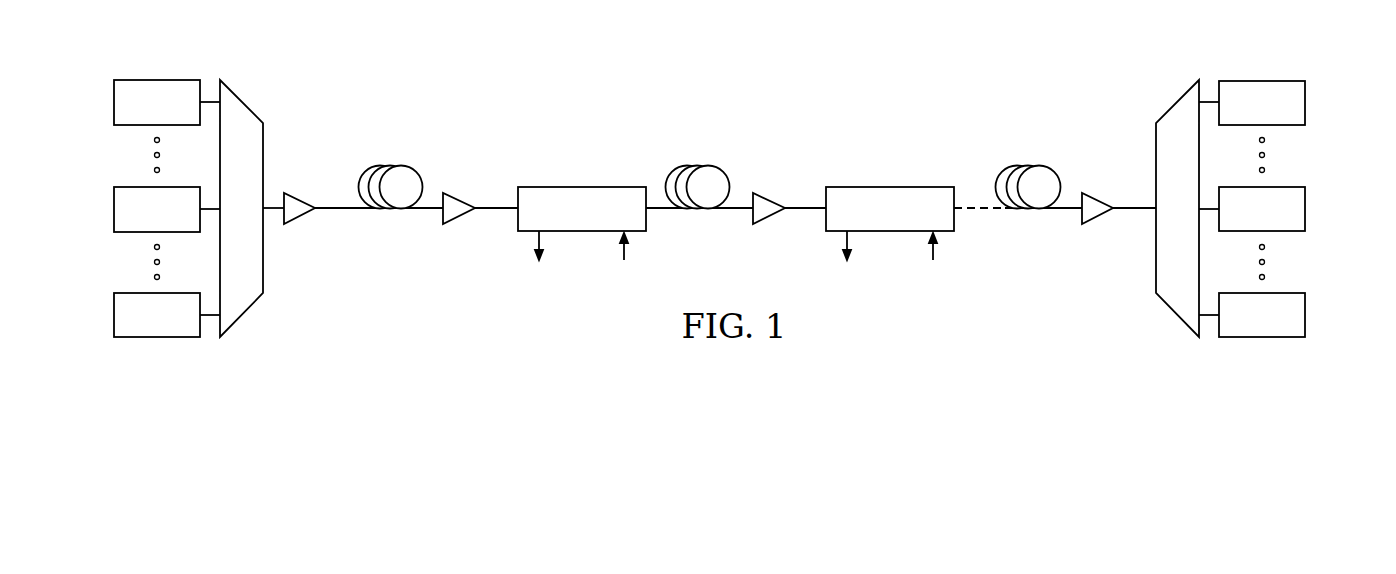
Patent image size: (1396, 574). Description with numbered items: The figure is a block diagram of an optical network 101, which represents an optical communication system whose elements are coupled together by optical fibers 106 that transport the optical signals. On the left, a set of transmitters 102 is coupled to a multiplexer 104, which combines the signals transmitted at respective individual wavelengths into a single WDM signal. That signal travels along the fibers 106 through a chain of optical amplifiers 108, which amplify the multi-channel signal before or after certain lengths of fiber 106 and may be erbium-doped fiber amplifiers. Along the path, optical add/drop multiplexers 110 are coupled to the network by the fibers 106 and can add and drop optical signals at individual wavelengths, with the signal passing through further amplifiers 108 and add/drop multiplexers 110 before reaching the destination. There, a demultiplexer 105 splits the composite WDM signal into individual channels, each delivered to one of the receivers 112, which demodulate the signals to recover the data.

The optical network 101 is at (473, 97).
The transmitter 102 is at (114, 88).
The multiplexer 104 is at (248, 107).
The demultiplexer 105 is at (1177, 102).
The optical fiber 106 is at (392, 165).
The optical amplifier 108 is at (303, 197).
The optical add/drop multiplexer 110 is at (582, 187).
The receiver 112 is at (1306, 92).